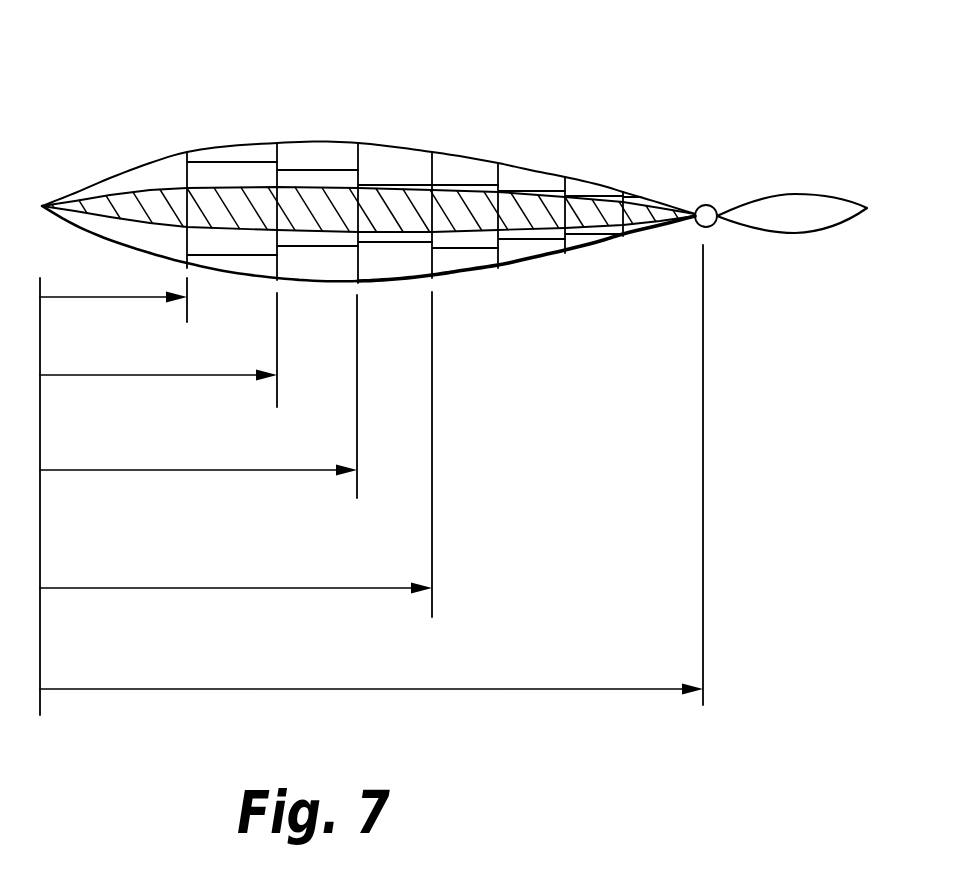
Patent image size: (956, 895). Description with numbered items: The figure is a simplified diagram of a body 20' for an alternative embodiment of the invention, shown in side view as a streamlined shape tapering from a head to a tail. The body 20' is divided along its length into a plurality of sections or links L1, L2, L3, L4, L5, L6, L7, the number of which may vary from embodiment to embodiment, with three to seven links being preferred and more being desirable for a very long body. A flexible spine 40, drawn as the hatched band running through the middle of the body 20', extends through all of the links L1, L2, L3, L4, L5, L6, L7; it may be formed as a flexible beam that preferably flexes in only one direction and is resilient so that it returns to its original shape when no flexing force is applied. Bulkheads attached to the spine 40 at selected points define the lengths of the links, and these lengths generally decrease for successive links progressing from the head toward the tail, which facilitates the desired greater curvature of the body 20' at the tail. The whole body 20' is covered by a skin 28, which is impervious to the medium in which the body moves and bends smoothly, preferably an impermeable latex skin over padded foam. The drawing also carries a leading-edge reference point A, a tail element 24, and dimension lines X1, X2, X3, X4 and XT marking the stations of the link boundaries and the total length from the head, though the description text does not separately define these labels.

The body 20' is at (368, 176).
The trailing flap / tail element 24 is at (787, 194).
The skin 28 is at (508, 266).
The flexible spine 40 is at (464, 210).
The leading edge point A is at (140, 166).
The first section or link L1 is at (227, 146).
The second section or link L2 is at (318, 142).
The third section or link L3 is at (402, 148).
The fourth section or link L4 is at (467, 156).
The fifth section or link L5 is at (552, 173).
The sixth section or link L6 is at (593, 249).
The seventh section or link L7 is at (651, 228).
The distance to first station X1 is at (113, 496).
The distance to second station X2 is at (158, 361).
The distance to third station X3 is at (198, 411).
The distance to fourth station X4 is at (236, 469).
The total length XT is at (371, 496).